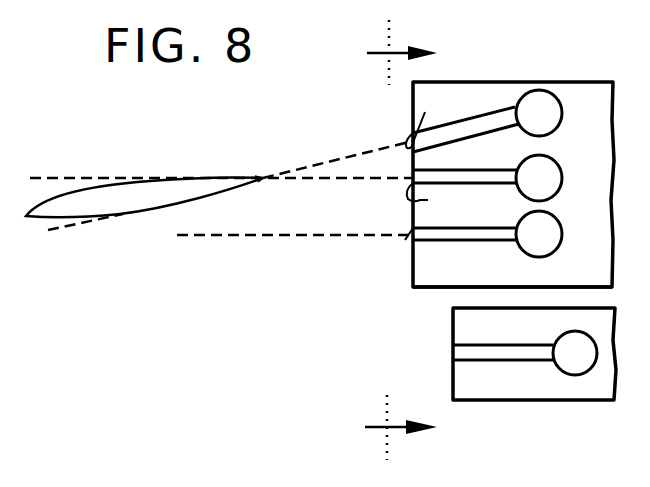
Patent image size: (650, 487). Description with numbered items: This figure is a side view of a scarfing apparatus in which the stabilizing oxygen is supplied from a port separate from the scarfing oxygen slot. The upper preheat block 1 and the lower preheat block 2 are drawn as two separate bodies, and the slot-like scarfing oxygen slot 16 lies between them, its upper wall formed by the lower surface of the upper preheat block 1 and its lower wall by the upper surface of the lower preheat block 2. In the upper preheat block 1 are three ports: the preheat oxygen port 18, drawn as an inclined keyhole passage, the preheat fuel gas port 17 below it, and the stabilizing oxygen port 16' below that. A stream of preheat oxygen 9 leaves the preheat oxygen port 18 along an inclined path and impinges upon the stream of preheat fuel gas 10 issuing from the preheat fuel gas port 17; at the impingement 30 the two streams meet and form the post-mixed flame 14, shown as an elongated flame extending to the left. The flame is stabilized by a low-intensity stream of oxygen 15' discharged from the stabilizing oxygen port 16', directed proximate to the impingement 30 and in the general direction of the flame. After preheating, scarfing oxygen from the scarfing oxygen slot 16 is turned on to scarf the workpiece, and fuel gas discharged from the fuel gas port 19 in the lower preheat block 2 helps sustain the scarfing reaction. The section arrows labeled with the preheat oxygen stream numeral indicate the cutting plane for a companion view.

The upper preheat block 1 is at (507, 80).
The lower preheat block 2 is at (521, 401).
The stream of preheat oxygen 9 is at (330, 161).
The stream of preheat fuel gas 10 is at (358, 180).
The post-mixed flame 14 is at (144, 197).
The low-intensity stream of oxygen 15' is at (230, 240).
The scarfing oxygen slot 16 is at (486, 306).
The stabilizing oxygen port 16' is at (390, 250).
The preheat fuel gas port 17 is at (431, 201).
The preheat oxygen port 18 is at (427, 119).
The fuel gas port 19 is at (453, 352).
The impingement 30 is at (261, 180).